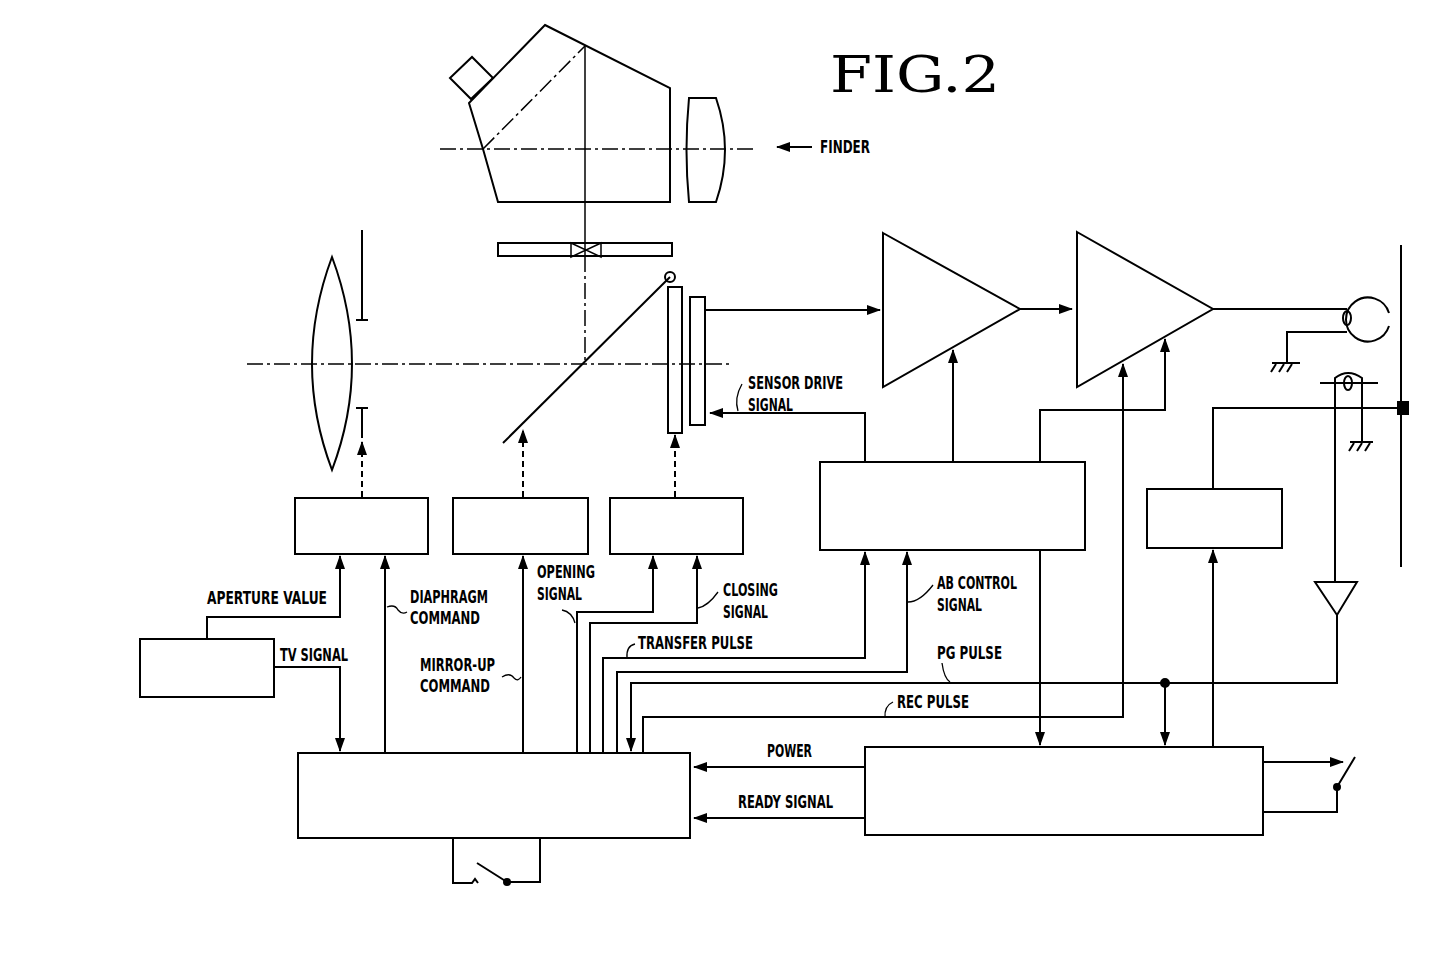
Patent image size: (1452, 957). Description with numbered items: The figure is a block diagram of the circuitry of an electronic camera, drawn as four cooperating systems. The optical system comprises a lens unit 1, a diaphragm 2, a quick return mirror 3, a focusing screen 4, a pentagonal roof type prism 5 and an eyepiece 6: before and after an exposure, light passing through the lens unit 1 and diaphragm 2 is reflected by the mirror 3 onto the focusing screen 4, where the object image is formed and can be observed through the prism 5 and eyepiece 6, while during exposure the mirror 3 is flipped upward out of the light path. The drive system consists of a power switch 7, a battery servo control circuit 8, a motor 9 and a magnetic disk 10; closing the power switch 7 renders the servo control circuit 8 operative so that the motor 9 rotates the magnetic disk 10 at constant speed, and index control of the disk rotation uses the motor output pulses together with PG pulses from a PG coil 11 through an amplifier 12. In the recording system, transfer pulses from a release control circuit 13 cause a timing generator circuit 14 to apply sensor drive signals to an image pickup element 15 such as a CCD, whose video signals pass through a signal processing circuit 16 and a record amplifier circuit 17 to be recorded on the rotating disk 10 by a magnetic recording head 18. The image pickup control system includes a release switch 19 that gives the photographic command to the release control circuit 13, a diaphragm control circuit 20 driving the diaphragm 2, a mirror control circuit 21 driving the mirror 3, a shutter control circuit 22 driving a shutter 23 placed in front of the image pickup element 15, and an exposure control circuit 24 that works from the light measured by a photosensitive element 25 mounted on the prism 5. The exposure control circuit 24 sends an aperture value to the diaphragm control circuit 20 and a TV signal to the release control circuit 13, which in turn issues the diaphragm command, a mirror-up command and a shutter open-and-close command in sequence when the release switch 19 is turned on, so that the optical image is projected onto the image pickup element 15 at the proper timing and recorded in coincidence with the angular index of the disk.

The lens unit 1 is at (328, 264).
The diaphragm 2 is at (364, 270).
The quick return mirror 3 is at (638, 308).
The focusing screen 4 is at (668, 252).
The pentagonal roof type prism 5 is at (660, 78).
The eyepiece 6 is at (720, 107).
The power switch 7 is at (1350, 775).
The battery servo control circuit 8 is at (1255, 745).
The motor 9 is at (1272, 488).
The magnetic disk 10 is at (1398, 500).
The PG coil 11 is at (1357, 375).
The amplifier 12 is at (1347, 582).
The release control circuit 13 is at (679, 840).
The timing generator circuit 14 is at (1077, 462).
The image pickup element 15 is at (705, 298).
The signal processing circuit 16 is at (995, 292).
The record amplifier circuit 17 is at (1170, 281).
The magnetic recording head 18 is at (1360, 298).
The release switch 19 is at (492, 868).
The diaphragm control circuit 20 is at (422, 498).
The mirror control circuit 21 is at (580, 498).
The shutter control circuit 22 is at (730, 498).
The shutter 23 is at (668, 418).
The exposure control circuit 24 is at (162, 638).
The photosensitive element 25 is at (452, 79).